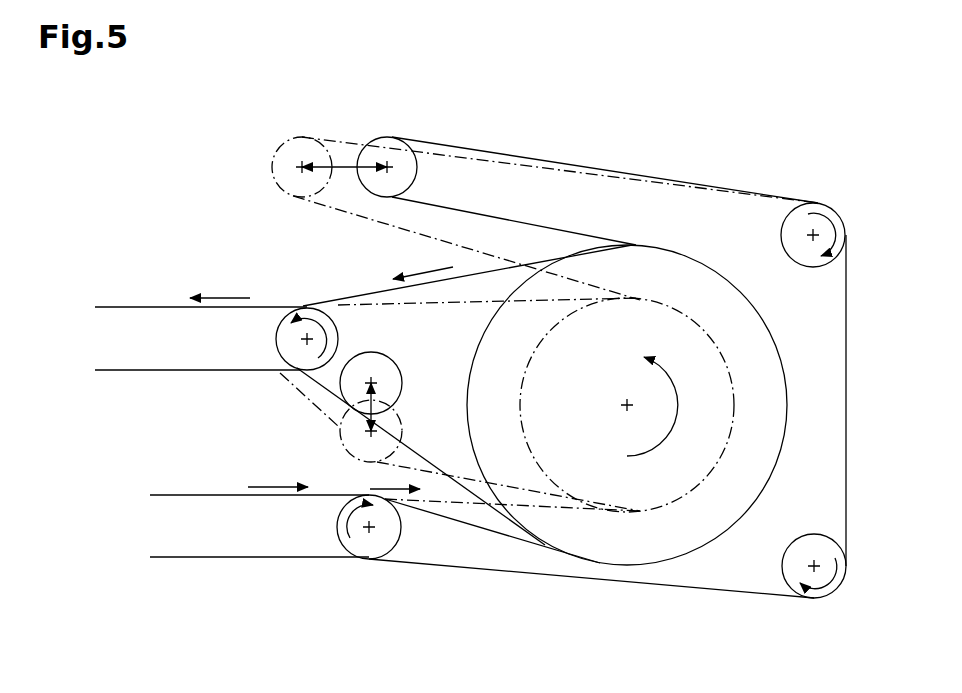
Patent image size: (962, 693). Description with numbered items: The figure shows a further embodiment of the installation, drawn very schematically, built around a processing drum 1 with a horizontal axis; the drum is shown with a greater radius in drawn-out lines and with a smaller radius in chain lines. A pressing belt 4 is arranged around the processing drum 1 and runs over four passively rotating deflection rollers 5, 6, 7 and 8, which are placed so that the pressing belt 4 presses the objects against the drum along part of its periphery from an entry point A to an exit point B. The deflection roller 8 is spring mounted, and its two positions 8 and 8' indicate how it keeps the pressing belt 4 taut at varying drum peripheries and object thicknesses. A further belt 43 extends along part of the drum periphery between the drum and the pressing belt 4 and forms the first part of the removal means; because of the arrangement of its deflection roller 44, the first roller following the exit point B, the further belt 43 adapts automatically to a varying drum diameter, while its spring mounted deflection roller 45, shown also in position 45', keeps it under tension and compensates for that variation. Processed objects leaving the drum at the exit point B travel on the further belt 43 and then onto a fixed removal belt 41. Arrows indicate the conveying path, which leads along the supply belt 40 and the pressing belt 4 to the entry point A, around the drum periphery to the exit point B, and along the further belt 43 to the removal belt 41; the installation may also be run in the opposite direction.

The processing drum 1 is at (700, 568).
The pressing belt 4 is at (493, 572).
The deflection roller 5 is at (371, 556).
The deflection roller 6 is at (835, 586).
The deflection roller 7 is at (828, 211).
The deflection roller 8 is at (376, 129).
The deflection roller position 8' is at (312, 129).
The supply belt 40 is at (195, 490).
The removal belt 41 is at (163, 299).
The further belt 43 is at (344, 301).
The deflection roller 44 is at (290, 311).
The spring mounted deflection roller 45 is at (324, 391).
The spring mounted deflection roller position 45' is at (326, 431).
The entry point A is at (496, 527).
The exit point B is at (477, 262).